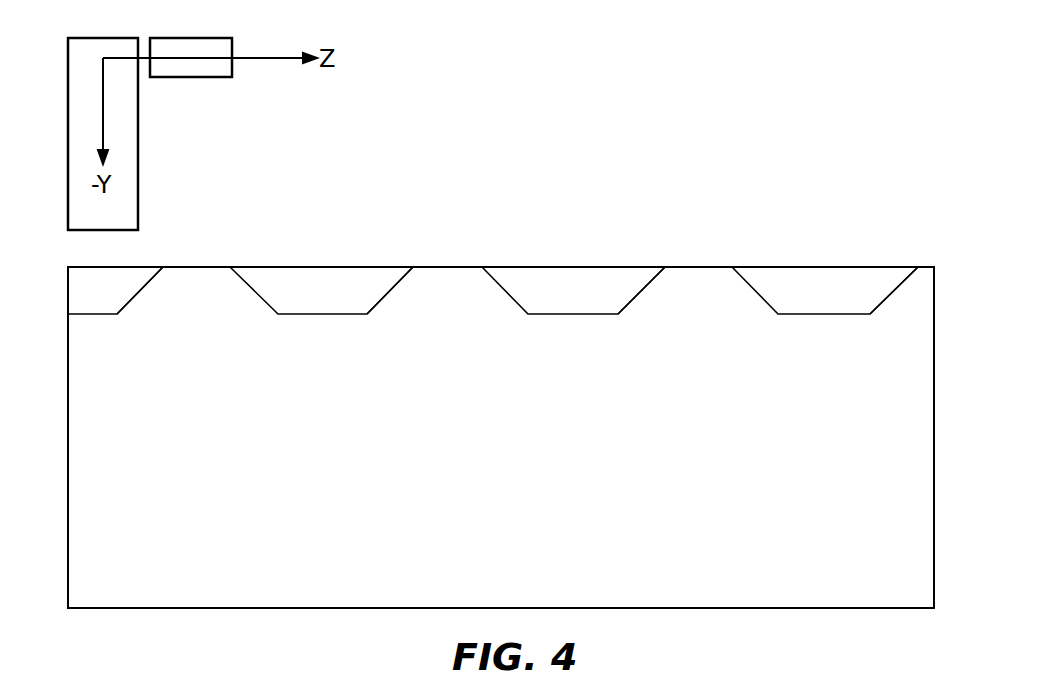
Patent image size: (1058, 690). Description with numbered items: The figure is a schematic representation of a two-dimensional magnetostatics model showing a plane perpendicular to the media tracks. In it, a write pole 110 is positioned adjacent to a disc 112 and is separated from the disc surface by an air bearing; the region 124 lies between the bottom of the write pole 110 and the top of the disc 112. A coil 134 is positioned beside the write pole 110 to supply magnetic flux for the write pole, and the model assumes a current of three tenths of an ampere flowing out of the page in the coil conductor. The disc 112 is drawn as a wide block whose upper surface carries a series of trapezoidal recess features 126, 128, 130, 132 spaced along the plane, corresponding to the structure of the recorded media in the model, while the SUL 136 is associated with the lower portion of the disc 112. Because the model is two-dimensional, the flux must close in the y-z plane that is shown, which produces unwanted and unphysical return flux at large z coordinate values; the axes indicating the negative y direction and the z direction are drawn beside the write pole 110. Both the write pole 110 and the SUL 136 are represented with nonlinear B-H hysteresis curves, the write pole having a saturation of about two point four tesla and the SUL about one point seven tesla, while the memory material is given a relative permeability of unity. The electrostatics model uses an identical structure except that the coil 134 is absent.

The write pole 110 is at (125, 156).
The coil 134 is at (203, 70).
The gap 124 is at (133, 248).
The disc 112 is at (773, 590).
The first recess 126 is at (125, 297).
The second recess 128 is at (372, 293).
The third recess 130 is at (627, 293).
The fourth recess 132 is at (847, 300).
The SUL 136 is at (252, 582).